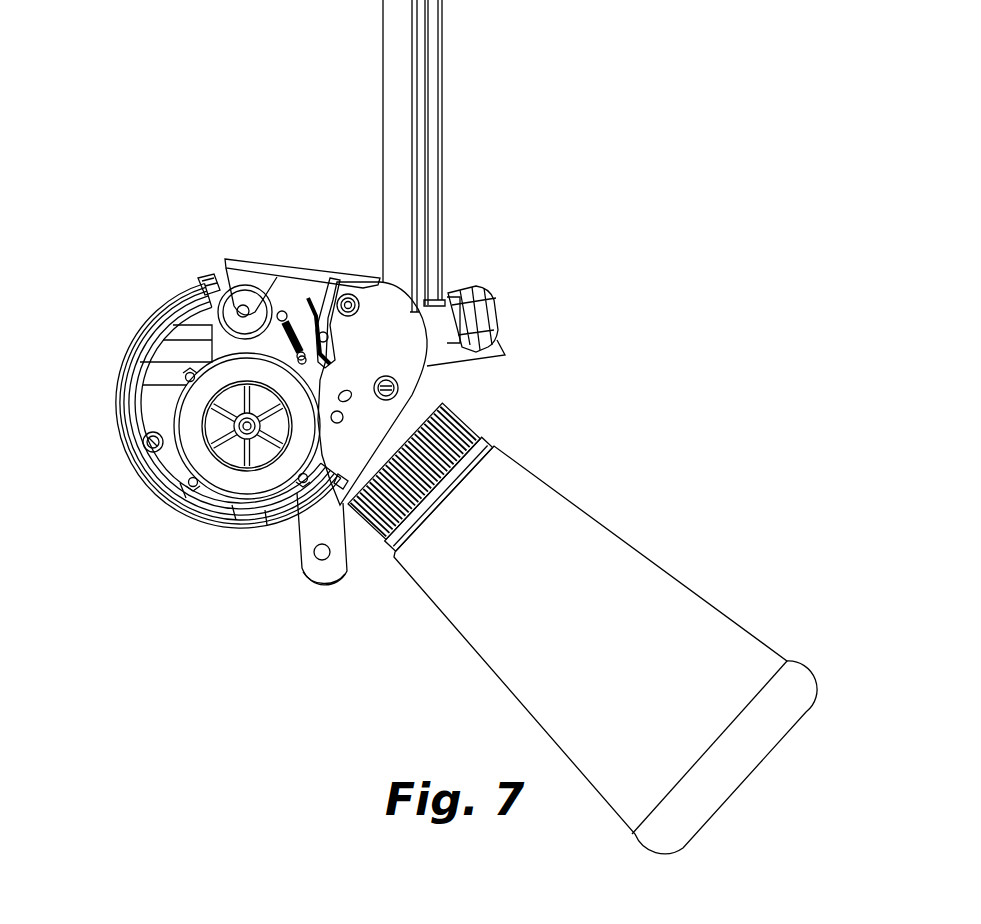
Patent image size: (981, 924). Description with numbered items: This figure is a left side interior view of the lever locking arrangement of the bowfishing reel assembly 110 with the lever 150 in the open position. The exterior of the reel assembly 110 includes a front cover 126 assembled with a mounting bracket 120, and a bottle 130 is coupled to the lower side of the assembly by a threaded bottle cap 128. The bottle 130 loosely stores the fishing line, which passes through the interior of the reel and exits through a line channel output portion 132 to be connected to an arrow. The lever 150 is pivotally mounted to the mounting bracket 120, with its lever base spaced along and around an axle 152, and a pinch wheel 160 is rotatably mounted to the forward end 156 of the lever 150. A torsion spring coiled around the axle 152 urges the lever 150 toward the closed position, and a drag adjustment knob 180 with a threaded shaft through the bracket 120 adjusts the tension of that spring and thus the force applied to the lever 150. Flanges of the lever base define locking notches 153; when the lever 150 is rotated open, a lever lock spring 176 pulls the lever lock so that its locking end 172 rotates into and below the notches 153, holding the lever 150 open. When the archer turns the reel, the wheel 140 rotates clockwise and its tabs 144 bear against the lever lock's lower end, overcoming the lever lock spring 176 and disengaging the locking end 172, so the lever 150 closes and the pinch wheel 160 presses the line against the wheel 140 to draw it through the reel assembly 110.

The reel assembly 110 is at (628, 226).
The mounting bracket 120 is at (420, 93).
The front cover 126 is at (125, 443).
The threaded bottle cap 128 is at (447, 402).
The bottle 130 is at (650, 612).
The line channel output portion 132 is at (175, 350).
The wheel 140 is at (250, 485).
The tabs or projections 144 is at (190, 377).
The lever 150 is at (258, 262).
The axle 152 is at (362, 303).
The locking notches 153 is at (337, 292).
The forward end of lever 156 is at (233, 278).
The pinch wheel 160 is at (205, 290).
The locking end of lever lock 172 is at (313, 312).
The lever lock spring 176 is at (317, 312).
The drag adjustment knob 180 is at (480, 318).